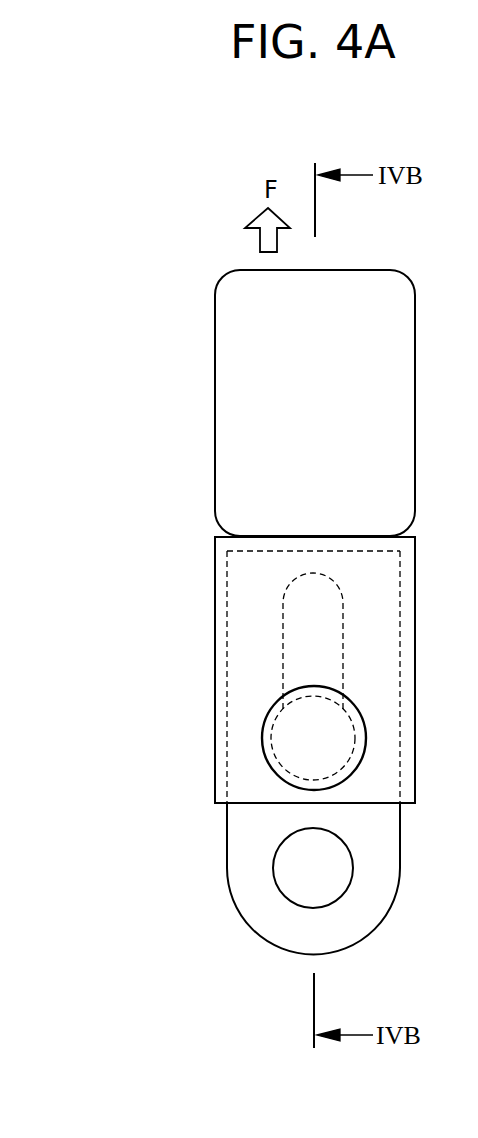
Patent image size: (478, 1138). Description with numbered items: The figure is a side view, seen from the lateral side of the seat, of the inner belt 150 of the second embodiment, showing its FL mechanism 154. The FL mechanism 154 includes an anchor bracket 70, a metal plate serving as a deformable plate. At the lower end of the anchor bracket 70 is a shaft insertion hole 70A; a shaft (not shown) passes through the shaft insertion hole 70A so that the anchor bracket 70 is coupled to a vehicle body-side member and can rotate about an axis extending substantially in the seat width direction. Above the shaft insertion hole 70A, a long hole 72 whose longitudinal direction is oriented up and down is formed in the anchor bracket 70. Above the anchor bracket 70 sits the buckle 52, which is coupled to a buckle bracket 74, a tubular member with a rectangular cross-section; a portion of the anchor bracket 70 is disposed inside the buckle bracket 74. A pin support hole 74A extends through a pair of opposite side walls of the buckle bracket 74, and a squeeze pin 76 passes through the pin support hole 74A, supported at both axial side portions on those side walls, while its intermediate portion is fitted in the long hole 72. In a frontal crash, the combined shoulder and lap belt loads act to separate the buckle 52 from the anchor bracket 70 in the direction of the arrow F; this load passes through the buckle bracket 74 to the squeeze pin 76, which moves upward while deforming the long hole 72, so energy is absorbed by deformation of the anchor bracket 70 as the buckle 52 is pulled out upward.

The inner belt 150 is at (125, 393).
The FL mechanism 154 is at (147, 522).
The buckle 52 is at (215, 368).
The buckle bracket 74 is at (212, 577).
The pin support hole 74A is at (282, 722).
The long hole 72 is at (290, 626).
The squeeze pin 76 is at (340, 738).
The anchor bracket 70 is at (233, 820).
The shaft insertion hole 70A is at (345, 880).